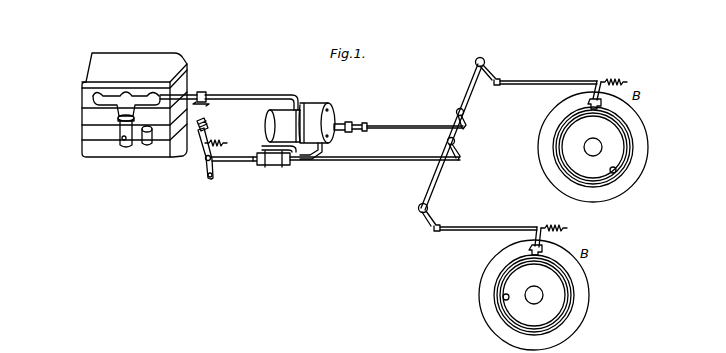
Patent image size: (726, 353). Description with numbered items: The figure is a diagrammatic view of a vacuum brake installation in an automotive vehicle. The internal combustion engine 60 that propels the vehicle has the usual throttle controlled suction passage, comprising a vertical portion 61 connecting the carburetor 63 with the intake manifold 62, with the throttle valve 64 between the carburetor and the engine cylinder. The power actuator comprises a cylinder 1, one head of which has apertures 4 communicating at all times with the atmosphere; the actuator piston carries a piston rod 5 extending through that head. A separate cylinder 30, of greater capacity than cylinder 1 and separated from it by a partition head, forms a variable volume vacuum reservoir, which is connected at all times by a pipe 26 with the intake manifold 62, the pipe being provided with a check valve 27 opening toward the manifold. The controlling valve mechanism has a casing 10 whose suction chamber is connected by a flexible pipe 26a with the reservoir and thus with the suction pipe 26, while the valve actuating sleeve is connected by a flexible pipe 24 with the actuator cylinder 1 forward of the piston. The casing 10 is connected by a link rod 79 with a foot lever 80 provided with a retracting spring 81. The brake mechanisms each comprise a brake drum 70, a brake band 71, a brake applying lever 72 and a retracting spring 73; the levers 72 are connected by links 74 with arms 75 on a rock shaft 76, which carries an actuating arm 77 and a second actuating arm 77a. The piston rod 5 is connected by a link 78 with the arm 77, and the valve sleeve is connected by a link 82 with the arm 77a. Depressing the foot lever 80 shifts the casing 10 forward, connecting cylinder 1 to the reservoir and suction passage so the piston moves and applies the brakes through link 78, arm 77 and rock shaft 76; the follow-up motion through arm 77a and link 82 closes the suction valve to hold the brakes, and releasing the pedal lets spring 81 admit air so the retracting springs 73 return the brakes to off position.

The cylinder 1 is at (318, 110).
The apertures 4 is at (332, 112).
The piston rod 5 is at (351, 119).
The casing 10 is at (270, 166).
The flexible pipe 24 is at (321, 148).
The pipe 26 is at (258, 94).
The flexible pipe 26a is at (262, 146).
The check valve 27 is at (201, 91).
The cylinder 30 is at (270, 114).
The internal combustion engine 60 is at (131, 56).
The vertical portion 61 is at (118, 120).
The intake manifold 62 is at (93, 99).
The carburetor 63 is at (147, 145).
The throttle valve 64 is at (122, 140).
The brake drum 70 is at (613, 173).
The brake band 71 is at (633, 136).
The brake applying lever 72 is at (590, 92).
The retracting spring 73 is at (612, 80).
The links 74 is at (546, 80).
The arms 75 is at (486, 72).
The rock shaft 76 is at (472, 98).
The actuating arm 77 is at (466, 120).
The second actuating arm 77a is at (463, 155).
The link 78 is at (406, 125).
The link rod 79 is at (233, 163).
The foot lever 80 is at (204, 157).
The retracting spring 81 is at (222, 141).
The link 82 is at (375, 174).